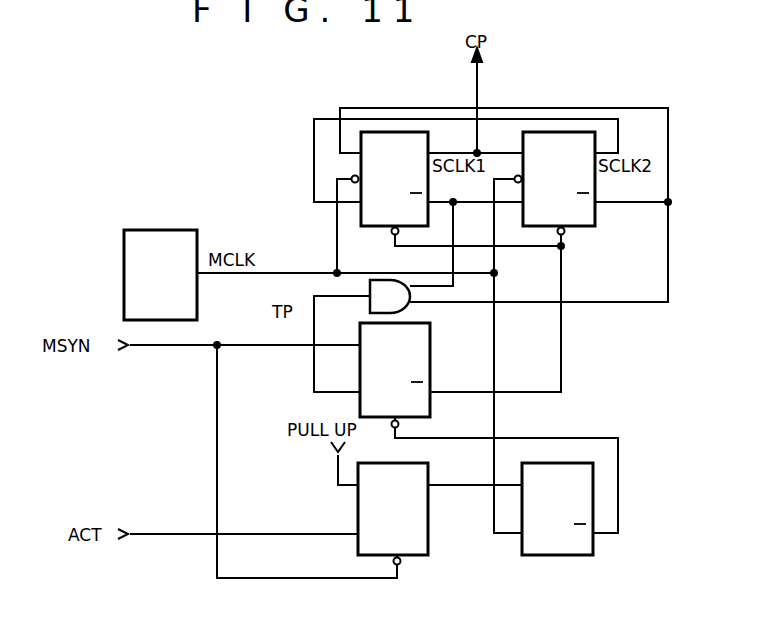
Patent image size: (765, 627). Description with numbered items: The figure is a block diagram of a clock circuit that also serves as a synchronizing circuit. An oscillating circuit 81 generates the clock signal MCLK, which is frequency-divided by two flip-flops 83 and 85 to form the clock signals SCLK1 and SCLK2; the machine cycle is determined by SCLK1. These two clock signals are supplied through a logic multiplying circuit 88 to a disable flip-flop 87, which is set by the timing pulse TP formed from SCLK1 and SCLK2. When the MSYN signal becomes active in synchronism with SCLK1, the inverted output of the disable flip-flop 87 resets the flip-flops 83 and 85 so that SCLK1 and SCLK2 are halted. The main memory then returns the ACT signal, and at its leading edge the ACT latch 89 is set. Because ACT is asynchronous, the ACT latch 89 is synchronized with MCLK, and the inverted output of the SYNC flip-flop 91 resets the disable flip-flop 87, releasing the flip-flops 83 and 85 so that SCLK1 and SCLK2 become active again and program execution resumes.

The oscillating circuit 81 is at (176, 236).
The flip-flop 83 is at (398, 132).
The flip-flop 85 is at (565, 132).
The disable flip-flop 87 is at (432, 348).
The logic multiplying circuit 88 is at (386, 284).
The ACT latch 89 is at (420, 557).
The SYNC flip-flop 91 is at (575, 556).